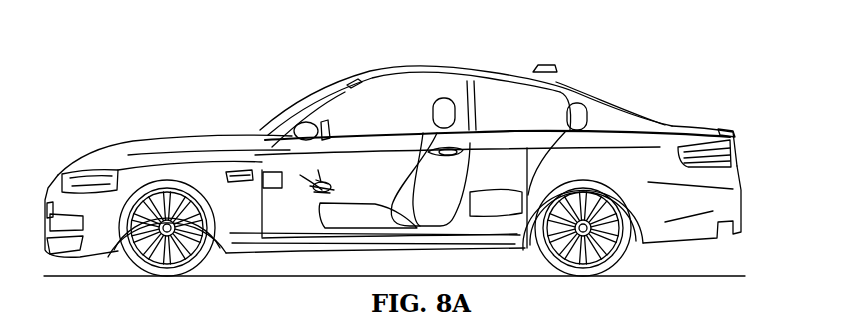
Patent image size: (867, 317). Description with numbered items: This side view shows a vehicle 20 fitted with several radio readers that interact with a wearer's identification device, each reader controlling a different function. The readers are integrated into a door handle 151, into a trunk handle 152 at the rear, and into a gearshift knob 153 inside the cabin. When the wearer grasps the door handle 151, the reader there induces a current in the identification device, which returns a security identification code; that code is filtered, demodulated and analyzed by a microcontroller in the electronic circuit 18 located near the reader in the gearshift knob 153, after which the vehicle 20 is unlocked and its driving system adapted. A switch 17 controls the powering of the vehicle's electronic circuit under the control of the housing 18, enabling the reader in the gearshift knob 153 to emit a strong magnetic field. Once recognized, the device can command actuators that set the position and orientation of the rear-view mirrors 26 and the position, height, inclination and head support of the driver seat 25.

The vehicle 20 is at (617, 84).
The electronic circuit 18 is at (268, 172).
The rear-view mirrors 26 is at (303, 125).
The switch 17 is at (317, 172).
The gearshift knob 153 is at (324, 183).
The driver seat 25 is at (442, 106).
The door handle 151 is at (463, 153).
The trunk handle 152 is at (723, 133).